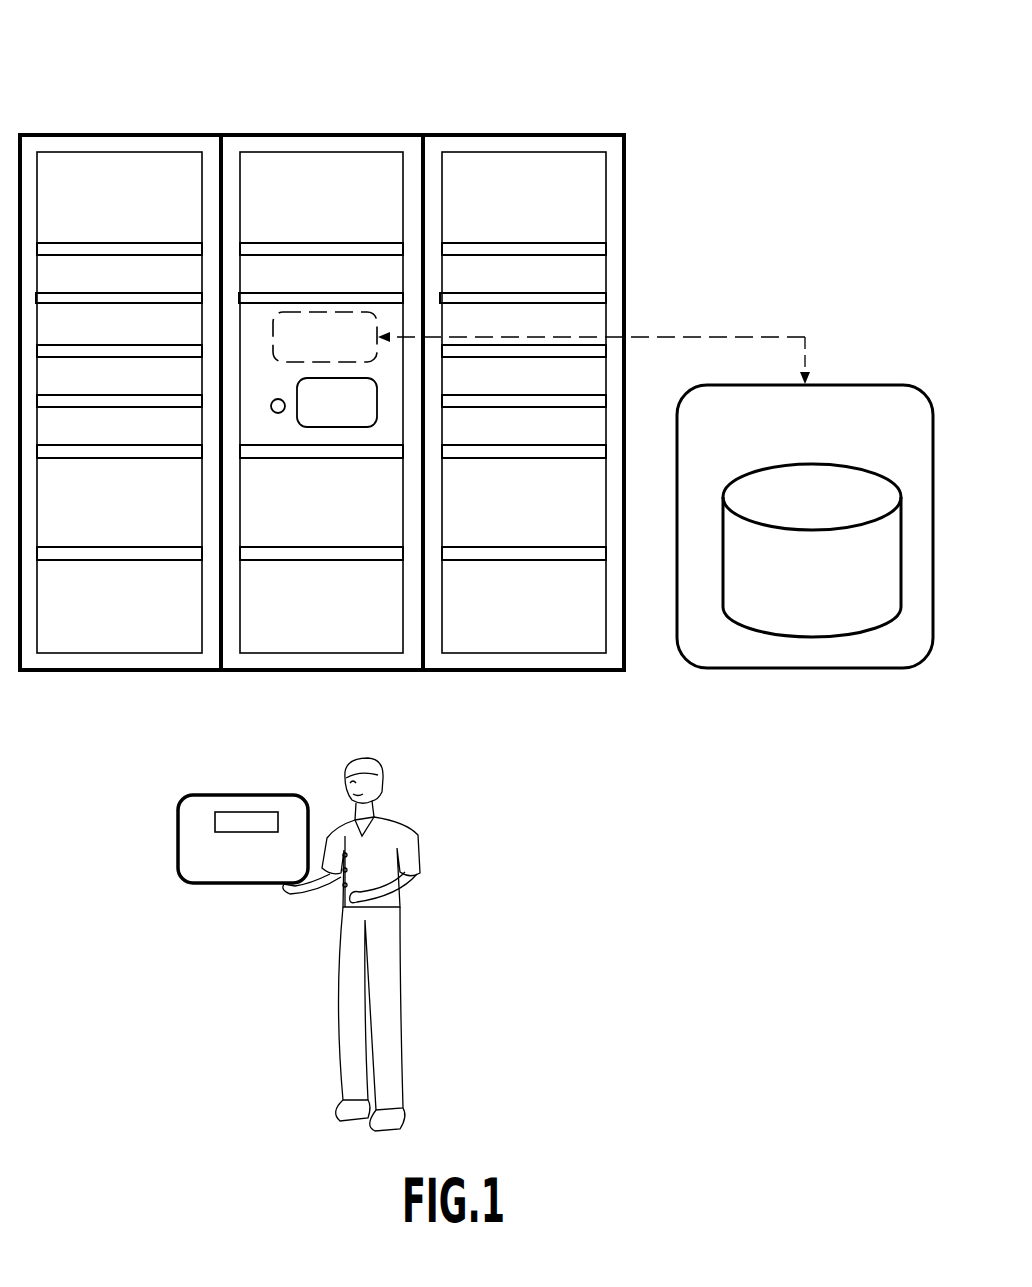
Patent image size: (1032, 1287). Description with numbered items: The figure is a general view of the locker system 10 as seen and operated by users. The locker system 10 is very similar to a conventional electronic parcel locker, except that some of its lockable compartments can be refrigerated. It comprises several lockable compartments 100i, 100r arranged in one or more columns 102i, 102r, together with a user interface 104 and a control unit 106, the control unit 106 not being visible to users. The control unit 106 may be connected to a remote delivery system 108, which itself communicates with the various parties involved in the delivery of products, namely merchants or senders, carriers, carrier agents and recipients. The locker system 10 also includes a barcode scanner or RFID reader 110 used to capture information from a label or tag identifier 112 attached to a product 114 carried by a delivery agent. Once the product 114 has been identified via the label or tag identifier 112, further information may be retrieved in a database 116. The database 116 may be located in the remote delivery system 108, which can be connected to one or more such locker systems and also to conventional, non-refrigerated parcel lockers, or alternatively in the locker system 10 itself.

The locker system 10 is at (76, 84).
The column 102i is at (280, 137).
The column 102r is at (535, 142).
The lockable compartment 100i is at (142, 342).
The lockable compartment 100r is at (545, 285).
The user interface 104 is at (355, 415).
The control unit 106 is at (337, 350).
The remote delivery system 108 is at (820, 425).
The barcode scanner or RFID reader 110 is at (271, 406).
The label or tag identifier 112 is at (251, 808).
The product 114 is at (247, 870).
The database 116 is at (830, 585).